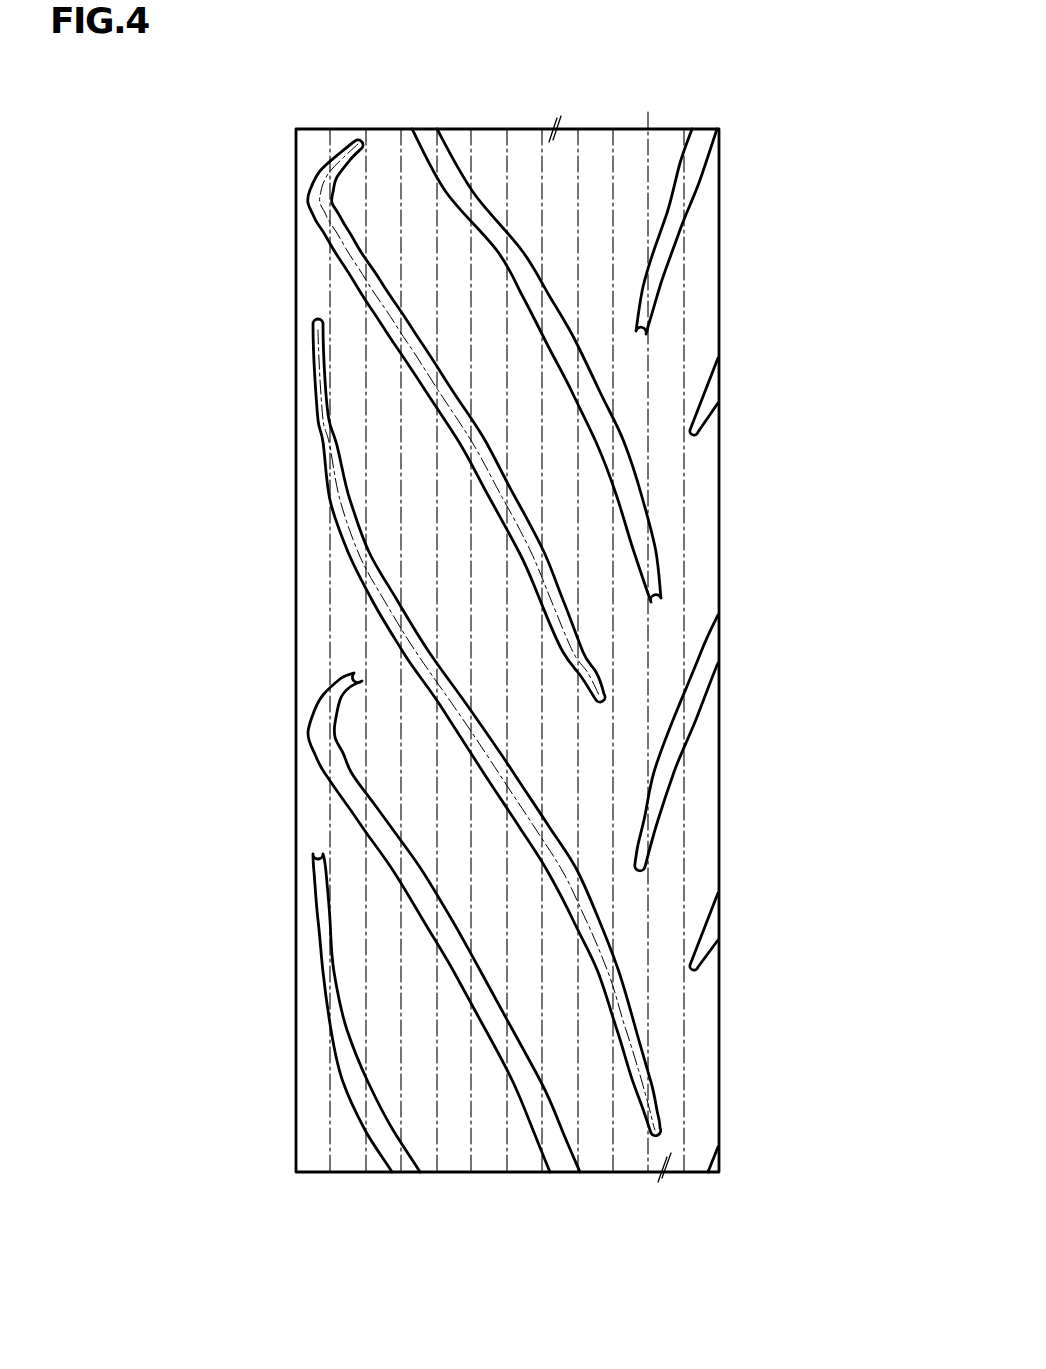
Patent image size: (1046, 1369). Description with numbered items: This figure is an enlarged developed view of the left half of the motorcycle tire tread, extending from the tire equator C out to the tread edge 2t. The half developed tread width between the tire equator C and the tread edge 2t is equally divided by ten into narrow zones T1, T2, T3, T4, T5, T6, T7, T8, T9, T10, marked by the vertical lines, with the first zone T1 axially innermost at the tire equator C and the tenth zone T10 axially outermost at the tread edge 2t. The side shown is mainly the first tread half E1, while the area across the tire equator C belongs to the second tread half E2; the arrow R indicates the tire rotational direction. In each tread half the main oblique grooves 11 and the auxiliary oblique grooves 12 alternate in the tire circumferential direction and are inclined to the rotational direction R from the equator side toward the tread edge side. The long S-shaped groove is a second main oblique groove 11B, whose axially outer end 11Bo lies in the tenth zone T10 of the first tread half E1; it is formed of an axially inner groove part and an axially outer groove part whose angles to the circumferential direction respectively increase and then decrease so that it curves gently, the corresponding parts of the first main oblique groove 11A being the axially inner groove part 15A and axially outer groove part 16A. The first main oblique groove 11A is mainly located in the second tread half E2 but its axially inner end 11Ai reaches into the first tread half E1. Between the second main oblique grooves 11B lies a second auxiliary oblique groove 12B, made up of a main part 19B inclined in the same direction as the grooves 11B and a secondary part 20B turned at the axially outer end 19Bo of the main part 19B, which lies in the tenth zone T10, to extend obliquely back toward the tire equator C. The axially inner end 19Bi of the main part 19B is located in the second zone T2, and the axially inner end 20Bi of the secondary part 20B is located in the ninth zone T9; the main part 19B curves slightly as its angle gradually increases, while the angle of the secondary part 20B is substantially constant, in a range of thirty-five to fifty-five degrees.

The tread edge 2t is at (295, 822).
The main oblique groove 11 is at (168, 658).
The first main oblique groove 11A is at (561, 292).
The second main oblique groove 11B is at (674, 222).
The axially inner end of first main oblique groove 11Ai is at (657, 1137).
The axially outer end of second main oblique groove 11Bo is at (315, 320).
The auxiliary oblique groove 12 is at (547, 66).
The second auxiliary oblique groove 12B is at (418, 935).
The axially inner groove part 15A is at (530, 856).
The axially outer groove part 16A is at (314, 450).
The main part 19B is at (484, 424).
The axially inner end of main part 19Bi is at (603, 700).
The axially outer end of main part 19Bo is at (314, 177).
The secondary part 20B is at (356, 169).
The axially inner end of secondary part 20Bi is at (362, 142).
The tire equator C is at (647, 630).
The first tread half E1 is at (611, 112).
The second tread half E2 is at (723, 112).
The tire rotational direction R is at (798, 460).
The first zone T1 is at (669, 1185).
The second zone T2 is at (592, 1184).
The third zone T3 is at (555, 1184).
The fourth zone T4 is at (520, 1184).
The fifth zone T5 is at (483, 1184).
The sixth zone T6 is at (452, 1184).
The seventh zone T7 is at (413, 1184).
The eighth zone T8 is at (378, 1184).
The ninth zone T9 is at (340, 1184).
The tenth zone T10 is at (305, 1184).